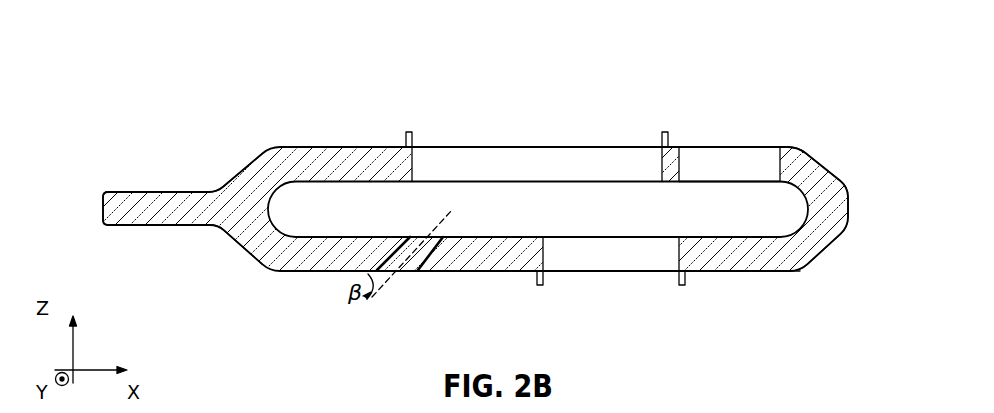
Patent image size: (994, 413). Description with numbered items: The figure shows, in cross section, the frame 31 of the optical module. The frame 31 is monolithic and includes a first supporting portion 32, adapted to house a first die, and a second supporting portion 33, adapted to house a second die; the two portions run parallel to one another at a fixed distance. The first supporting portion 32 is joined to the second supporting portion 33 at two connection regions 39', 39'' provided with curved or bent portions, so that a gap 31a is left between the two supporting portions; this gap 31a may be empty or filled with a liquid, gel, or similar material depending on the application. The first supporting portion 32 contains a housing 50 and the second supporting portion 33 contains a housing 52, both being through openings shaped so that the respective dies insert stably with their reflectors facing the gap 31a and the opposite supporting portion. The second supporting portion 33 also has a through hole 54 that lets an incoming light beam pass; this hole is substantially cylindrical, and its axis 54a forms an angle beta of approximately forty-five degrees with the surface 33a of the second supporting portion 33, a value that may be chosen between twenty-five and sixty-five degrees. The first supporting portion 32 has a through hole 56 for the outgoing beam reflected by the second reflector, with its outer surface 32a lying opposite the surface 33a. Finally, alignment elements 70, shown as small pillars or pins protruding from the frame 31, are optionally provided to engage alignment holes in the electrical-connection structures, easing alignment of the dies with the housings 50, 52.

The frame 31 is at (475, 142).
The gap 31a is at (528, 218).
The first supporting portion 32 is at (672, 155).
The outer surface of bridge wall 32a is at (737, 142).
The second supporting portion 33 is at (713, 255).
The surface of the second supporting portion 33a is at (789, 274).
The connection region 39' is at (183, 198).
The connection region 39'' is at (850, 198).
The housing 50 is at (558, 160).
The housing 52 is at (626, 265).
The through hole 54 is at (416, 262).
The axis 54a is at (350, 310).
The through hole 56 is at (757, 158).
The alignment elements 70 is at (405, 135).